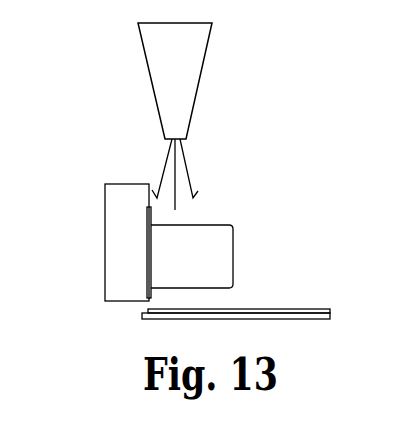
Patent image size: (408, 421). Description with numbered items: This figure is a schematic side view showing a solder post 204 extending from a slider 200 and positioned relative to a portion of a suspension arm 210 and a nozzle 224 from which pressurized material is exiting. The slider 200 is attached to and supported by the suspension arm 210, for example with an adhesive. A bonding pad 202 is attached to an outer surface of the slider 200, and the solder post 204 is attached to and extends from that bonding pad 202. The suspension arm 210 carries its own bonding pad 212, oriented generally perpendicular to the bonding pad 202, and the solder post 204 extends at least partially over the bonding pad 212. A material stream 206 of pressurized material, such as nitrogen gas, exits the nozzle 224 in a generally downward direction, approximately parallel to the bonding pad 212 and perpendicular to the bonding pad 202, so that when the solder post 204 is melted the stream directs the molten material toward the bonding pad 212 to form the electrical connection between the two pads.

The slider 200 is at (118, 237).
The bonding pad 202 is at (146, 221).
The solder post 204 is at (228, 238).
The material stream 206 is at (189, 163).
The suspension arm 210 is at (298, 319).
The bonding pad 212 is at (297, 309).
The nozzle 224 is at (192, 42).